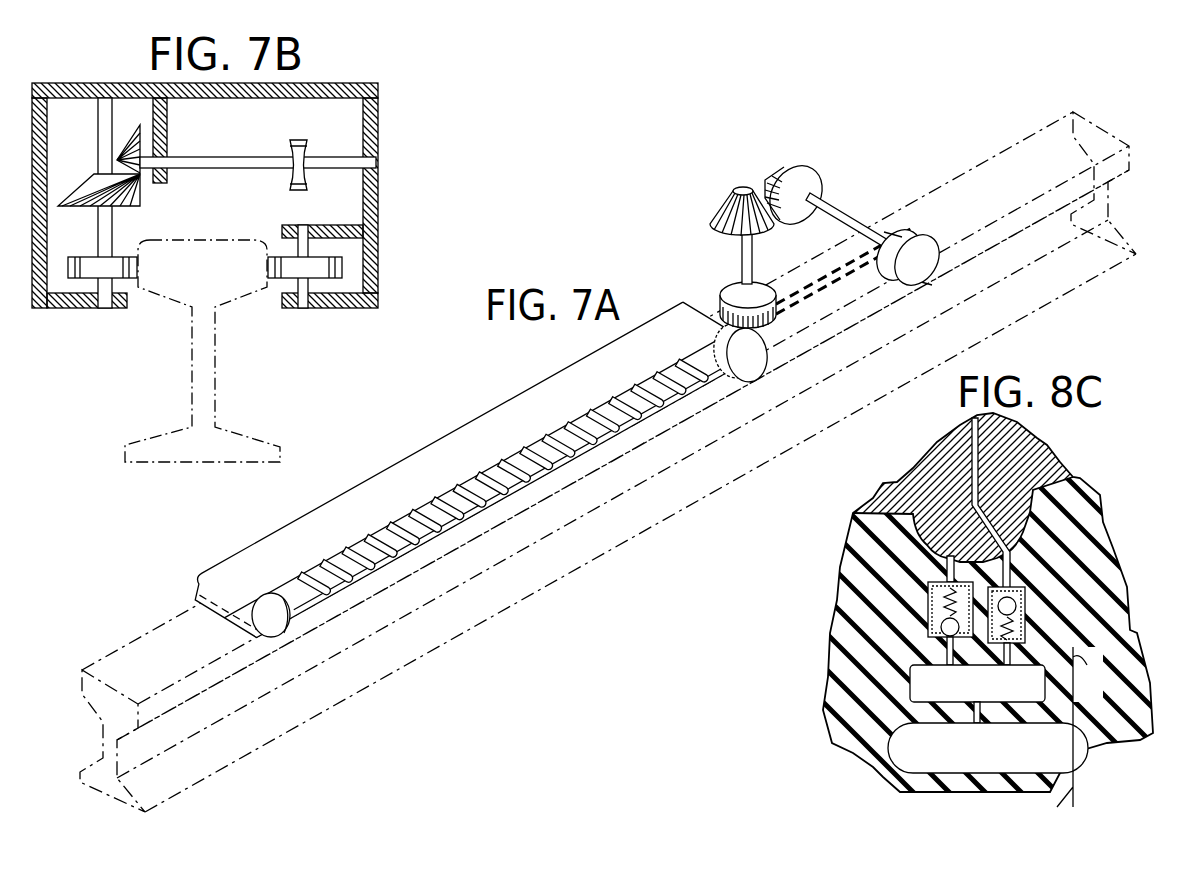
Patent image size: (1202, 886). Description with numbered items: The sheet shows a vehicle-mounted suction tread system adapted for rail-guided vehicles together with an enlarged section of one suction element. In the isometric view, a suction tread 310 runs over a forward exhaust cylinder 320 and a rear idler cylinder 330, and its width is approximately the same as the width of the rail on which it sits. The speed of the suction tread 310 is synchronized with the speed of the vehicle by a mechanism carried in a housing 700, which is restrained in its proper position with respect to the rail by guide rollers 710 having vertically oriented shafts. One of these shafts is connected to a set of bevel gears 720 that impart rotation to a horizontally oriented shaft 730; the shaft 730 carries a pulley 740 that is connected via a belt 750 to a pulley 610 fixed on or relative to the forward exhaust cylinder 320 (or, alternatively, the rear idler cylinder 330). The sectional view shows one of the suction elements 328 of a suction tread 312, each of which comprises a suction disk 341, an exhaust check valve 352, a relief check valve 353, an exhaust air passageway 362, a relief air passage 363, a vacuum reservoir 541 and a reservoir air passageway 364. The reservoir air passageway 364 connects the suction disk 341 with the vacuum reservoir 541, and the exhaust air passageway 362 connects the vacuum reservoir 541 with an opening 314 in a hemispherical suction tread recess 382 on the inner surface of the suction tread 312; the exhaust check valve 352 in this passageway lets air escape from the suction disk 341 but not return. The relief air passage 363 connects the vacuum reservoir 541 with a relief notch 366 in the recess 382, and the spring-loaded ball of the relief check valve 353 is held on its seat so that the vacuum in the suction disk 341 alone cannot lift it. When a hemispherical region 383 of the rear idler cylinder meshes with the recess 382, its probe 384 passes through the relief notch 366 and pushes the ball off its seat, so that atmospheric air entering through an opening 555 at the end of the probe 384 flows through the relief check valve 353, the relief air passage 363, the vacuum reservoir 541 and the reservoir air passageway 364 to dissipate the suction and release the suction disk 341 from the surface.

In FIG. 7A, the suction tread 310 is at (417, 463).
In FIG. 7A, the forward exhaust cylinder 320 is at (700, 348).
In FIG. 7A, the rear idler cylinder 330 is at (273, 622).
In FIG. 7A, the pulley 610 is at (747, 362).
In FIG. 7B, the housing 700 is at (388, 106).
In FIG. 7B, the guide rollers 710 is at (92, 270).
In FIG. 7B, the bevel gears 720 is at (88, 170).
In FIG. 7A, the bevel gears 720 is at (753, 182).
In FIG. 7B, the horizontally oriented shaft 730 is at (243, 160).
In FIG. 7A, the horizontally oriented shaft 730 is at (843, 218).
In FIG. 7B, the pulley 740 is at (293, 190).
In FIG. 7A, the pulley 740 is at (917, 268).
In FIG. 7A, the belt 750 is at (822, 336).
In FIG. 8C, the suction tread 312 is at (830, 737).
In FIG. 8C, the opening 314 is at (852, 557).
In FIG. 8C, the suction elements 328 is at (1093, 727).
In FIG. 8C, the suction disk 341 is at (878, 768).
In FIG. 8C, the exhaust check valve 352 is at (928, 600).
In FIG. 8C, the relief check valve 353 is at (1040, 625).
In FIG. 8C, the exhaust air passageway 362 is at (845, 640).
In FIG. 8C, the relief air passageway 363 is at (988, 748).
In FIG. 8C, the reservoir air passageway 364 is at (840, 710).
In FIG. 8C, the relief notch 366 is at (1040, 555).
In FIG. 8C, the hemispherical suction tread recess 382 is at (900, 538).
In FIG. 8C, the hemispherical region 383 is at (953, 538).
In FIG. 8C, the probe 384 is at (977, 694).
In FIG. 8C, the vacuum reservoir 541 is at (840, 670).
In FIG. 8C, the opening 555 is at (1030, 585).